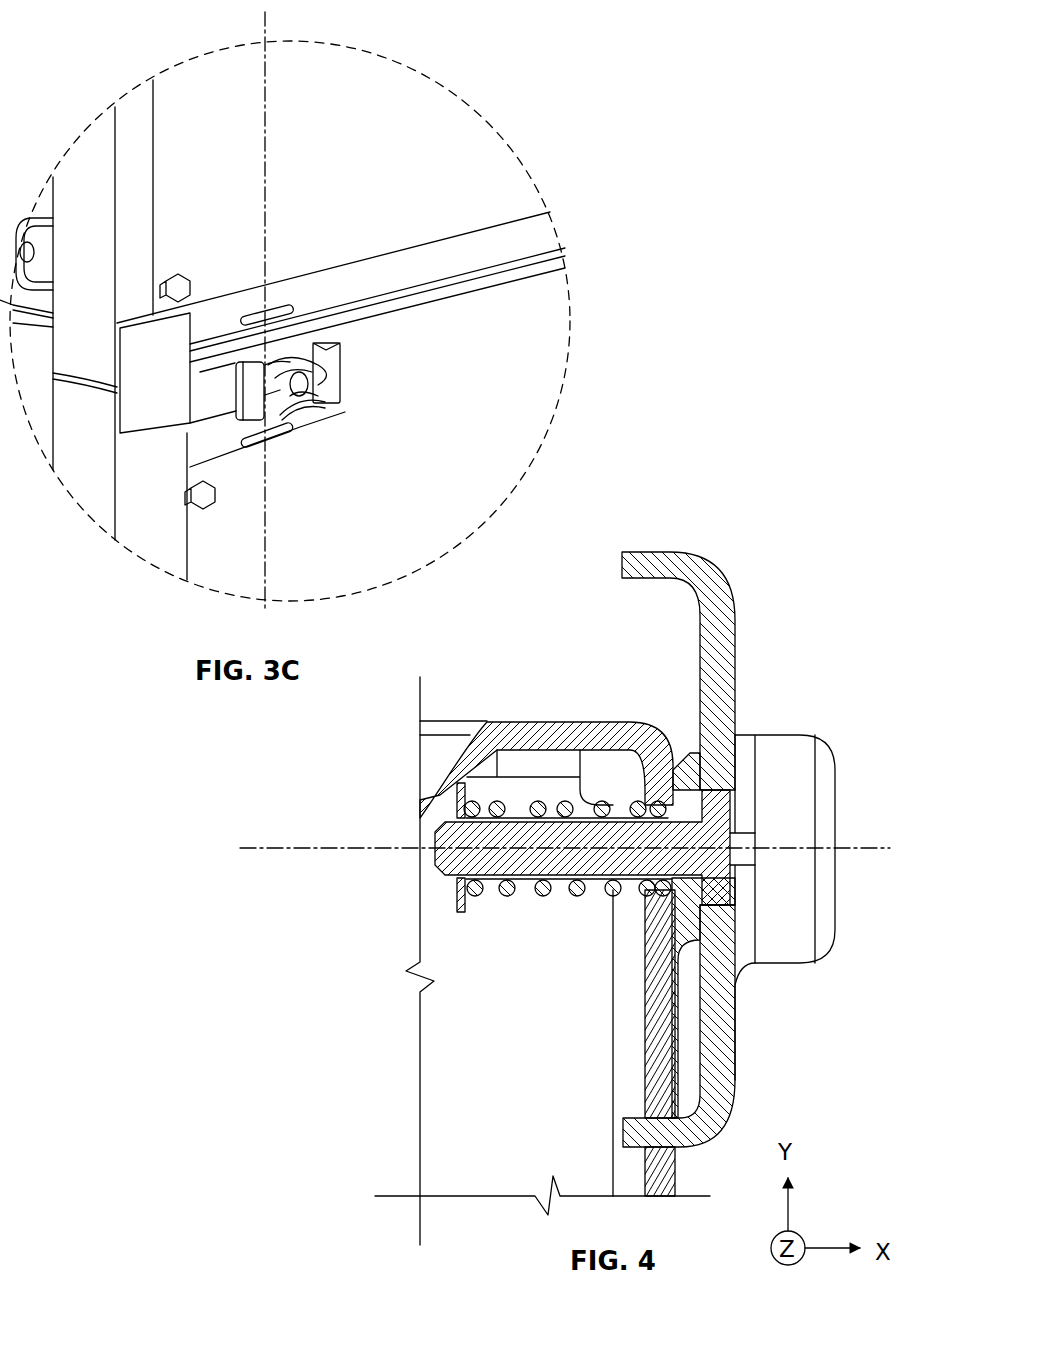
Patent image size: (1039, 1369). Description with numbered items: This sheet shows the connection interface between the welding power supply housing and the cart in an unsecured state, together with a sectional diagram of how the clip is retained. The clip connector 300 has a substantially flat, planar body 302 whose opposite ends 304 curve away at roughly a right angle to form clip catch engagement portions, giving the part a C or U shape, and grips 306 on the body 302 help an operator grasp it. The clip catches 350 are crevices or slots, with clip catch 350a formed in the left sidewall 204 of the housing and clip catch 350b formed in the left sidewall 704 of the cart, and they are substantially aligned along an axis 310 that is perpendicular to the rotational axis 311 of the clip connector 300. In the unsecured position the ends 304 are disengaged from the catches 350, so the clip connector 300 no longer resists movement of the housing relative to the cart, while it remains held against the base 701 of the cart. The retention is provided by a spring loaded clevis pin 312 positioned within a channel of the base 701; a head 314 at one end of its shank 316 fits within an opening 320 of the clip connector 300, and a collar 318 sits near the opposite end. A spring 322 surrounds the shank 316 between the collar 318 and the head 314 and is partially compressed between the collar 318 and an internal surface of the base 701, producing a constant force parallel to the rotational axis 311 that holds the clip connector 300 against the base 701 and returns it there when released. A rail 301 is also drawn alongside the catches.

In FIG. 3C, the left sidewall 204 is at (435, 96).
In FIG. 3C, the clip connector 300 is at (325, 426).
In FIG. 4, the clip connector 300 is at (845, 807).
In FIG. 3C, the rail 301 is at (526, 266).
In FIG. 3C, the body 302 is at (272, 378).
In FIG. 4, the body 302 is at (725, 1017).
In FIG. 3C, the ends 304 is at (238, 408).
In FIG. 4, the ends 304 is at (655, 552).
In FIG. 3C, the grips 306 is at (320, 372).
In FIG. 4, the grips 306 is at (827, 917).
In FIG. 3C, the axis 310 is at (264, 28).
In FIG. 4, the rotational axis 311 is at (250, 847).
In FIG. 4, the spring loaded clevis pin 312 is at (420, 838).
In FIG. 4, the head 314 is at (677, 760).
In FIG. 4, the shank 316 is at (617, 815).
In FIG. 4, the collar 318 is at (455, 885).
In FIG. 4, the opening 320 is at (720, 777).
In FIG. 4, the spring 322 is at (507, 895).
In FIG. 4, the clip catches 350 is at (630, 1104).
In FIG. 3C, the clip catch 350a is at (250, 305).
In FIG. 3C, the clip catch 350b is at (252, 452).
In FIG. 4, the base 701 is at (433, 703).
In FIG. 3C, the left sidewall 704 is at (460, 530).